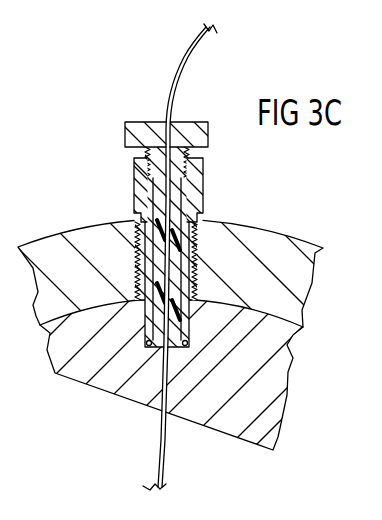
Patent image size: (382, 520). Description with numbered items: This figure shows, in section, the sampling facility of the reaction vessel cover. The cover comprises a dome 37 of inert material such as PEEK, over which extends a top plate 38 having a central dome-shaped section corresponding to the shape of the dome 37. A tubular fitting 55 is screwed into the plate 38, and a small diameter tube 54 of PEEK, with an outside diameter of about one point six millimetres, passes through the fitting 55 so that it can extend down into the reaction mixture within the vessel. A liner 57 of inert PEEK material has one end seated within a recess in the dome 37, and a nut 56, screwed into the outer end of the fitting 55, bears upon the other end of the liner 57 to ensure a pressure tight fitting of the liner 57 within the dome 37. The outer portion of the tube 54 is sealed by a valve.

The dome 37 is at (257, 362).
The top plate 38 is at (257, 248).
The tube 54 is at (157, 458).
The tubular fitting 55 is at (147, 202).
The nut 56 is at (143, 120).
The liner 57 is at (200, 200).